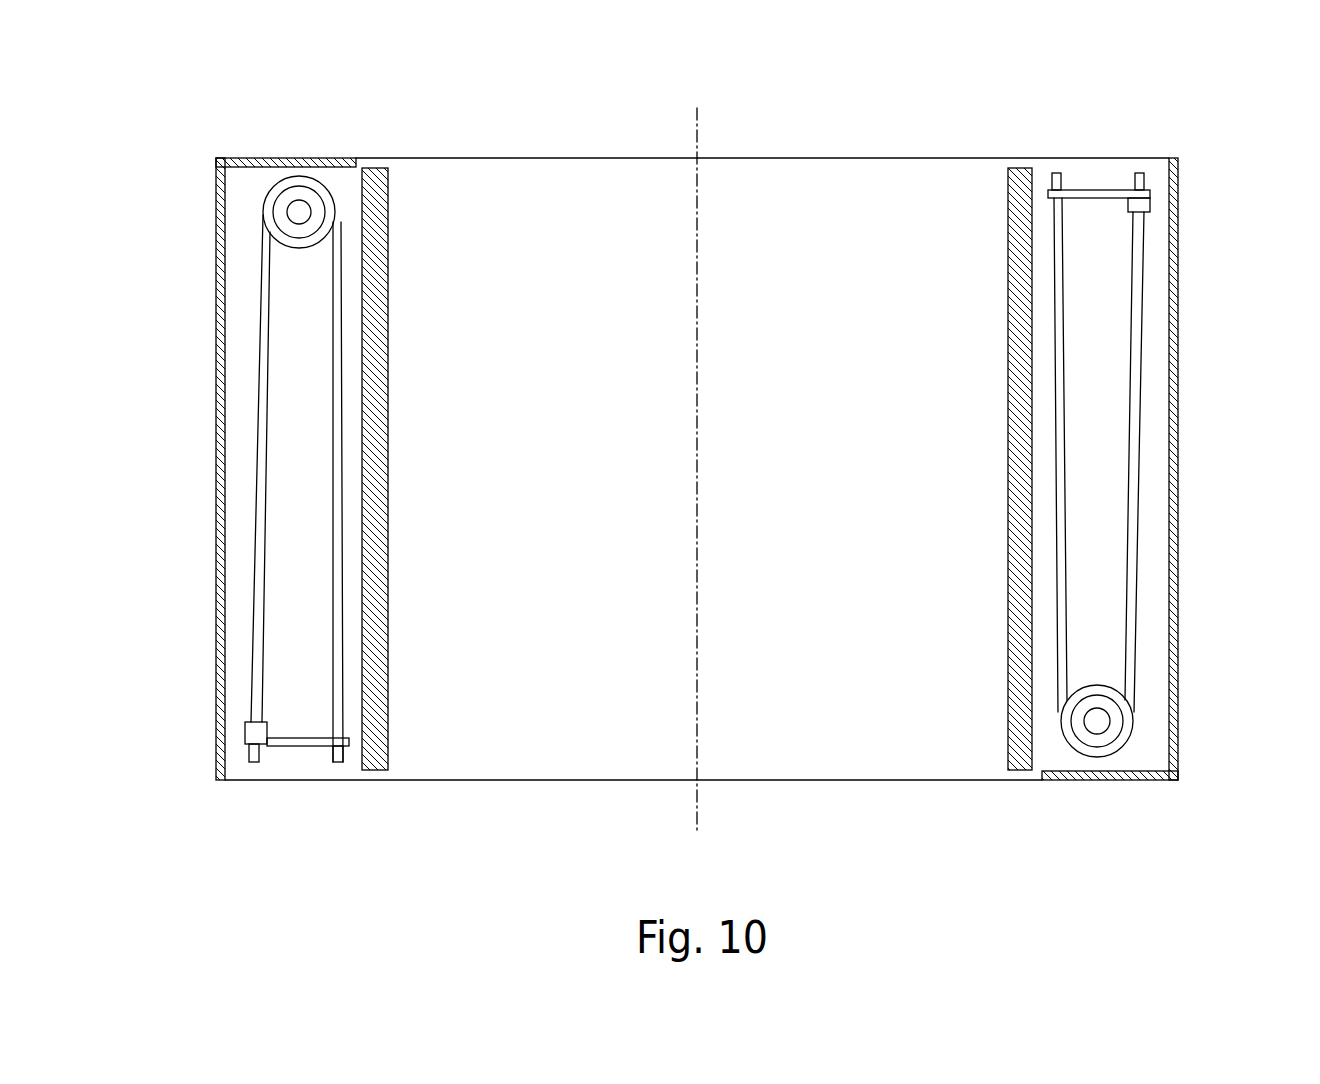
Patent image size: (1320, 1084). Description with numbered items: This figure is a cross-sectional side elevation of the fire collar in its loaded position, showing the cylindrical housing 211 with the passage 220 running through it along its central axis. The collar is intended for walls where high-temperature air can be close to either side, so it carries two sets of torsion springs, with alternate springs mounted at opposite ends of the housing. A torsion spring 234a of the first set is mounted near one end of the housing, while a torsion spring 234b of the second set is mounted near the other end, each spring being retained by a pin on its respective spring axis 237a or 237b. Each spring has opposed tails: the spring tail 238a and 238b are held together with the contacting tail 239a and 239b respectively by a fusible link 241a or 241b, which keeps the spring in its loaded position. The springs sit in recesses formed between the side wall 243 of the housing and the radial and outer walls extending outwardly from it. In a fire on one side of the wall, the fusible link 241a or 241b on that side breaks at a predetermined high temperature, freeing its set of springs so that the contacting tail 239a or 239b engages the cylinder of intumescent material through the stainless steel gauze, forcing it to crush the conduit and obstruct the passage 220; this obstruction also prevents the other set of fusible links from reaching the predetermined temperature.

The cylindrical housing 211 is at (1178, 568).
The passage 220 is at (762, 200).
The torsion spring 234a is at (1097, 760).
The torsion spring 234b is at (285, 183).
The spring axis 237a is at (1100, 722).
The spring axis 237b is at (300, 212).
The spring tail 238a is at (1140, 368).
The spring tail 238b is at (263, 423).
The contacting tail 239a is at (1057, 300).
The contacting tail 239b is at (337, 480).
The fusible link 241a is at (1078, 192).
The fusible link 241b is at (303, 742).
The side wall 243 is at (380, 272).